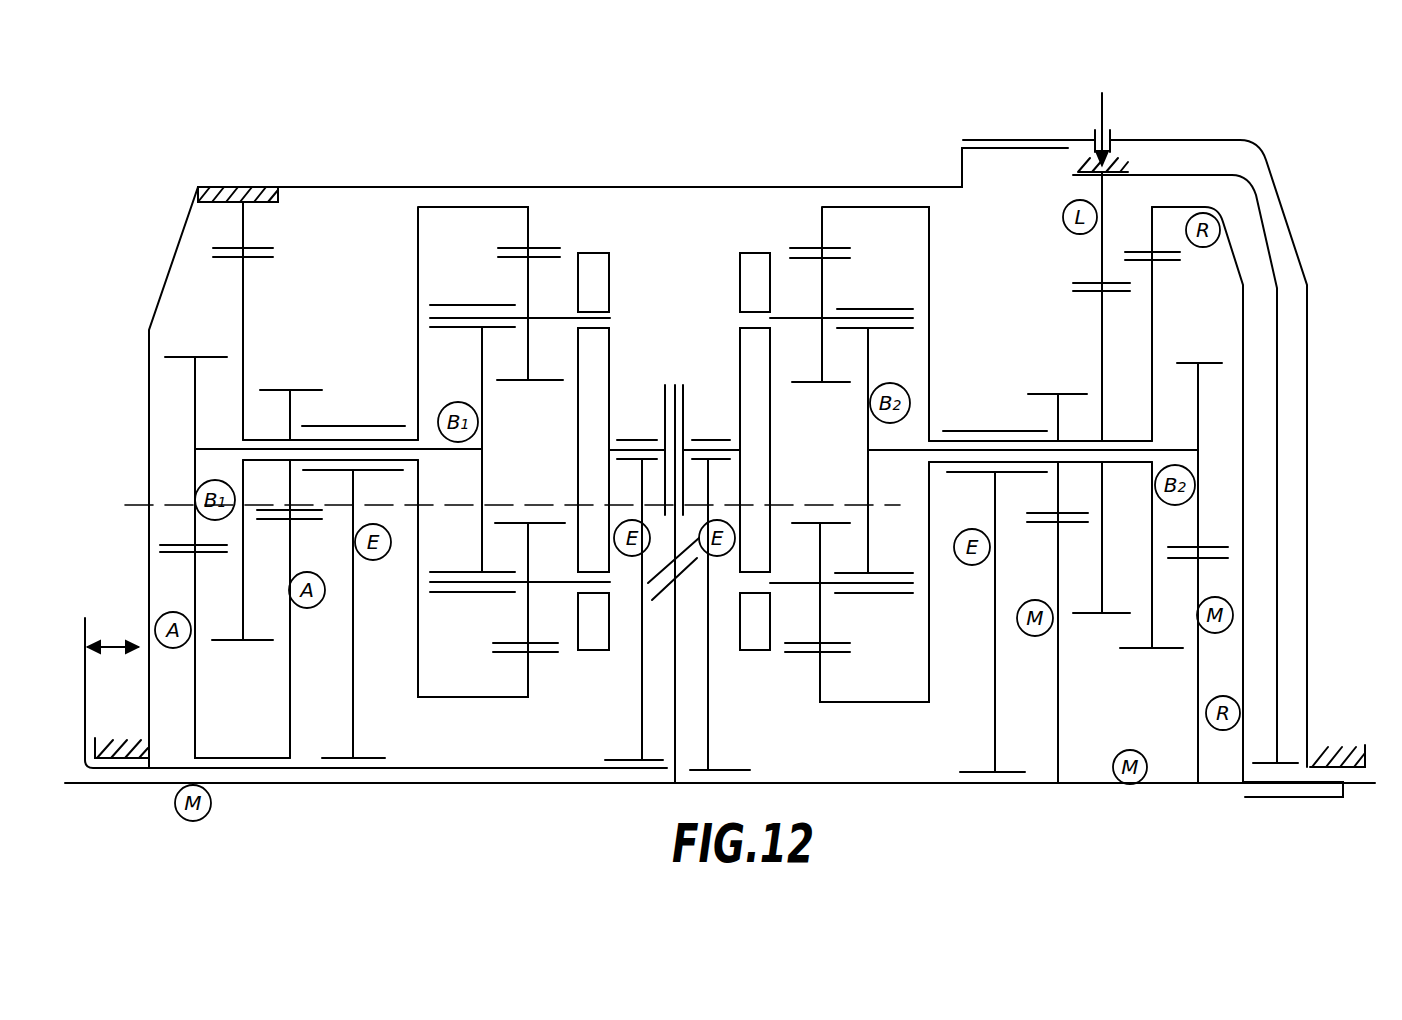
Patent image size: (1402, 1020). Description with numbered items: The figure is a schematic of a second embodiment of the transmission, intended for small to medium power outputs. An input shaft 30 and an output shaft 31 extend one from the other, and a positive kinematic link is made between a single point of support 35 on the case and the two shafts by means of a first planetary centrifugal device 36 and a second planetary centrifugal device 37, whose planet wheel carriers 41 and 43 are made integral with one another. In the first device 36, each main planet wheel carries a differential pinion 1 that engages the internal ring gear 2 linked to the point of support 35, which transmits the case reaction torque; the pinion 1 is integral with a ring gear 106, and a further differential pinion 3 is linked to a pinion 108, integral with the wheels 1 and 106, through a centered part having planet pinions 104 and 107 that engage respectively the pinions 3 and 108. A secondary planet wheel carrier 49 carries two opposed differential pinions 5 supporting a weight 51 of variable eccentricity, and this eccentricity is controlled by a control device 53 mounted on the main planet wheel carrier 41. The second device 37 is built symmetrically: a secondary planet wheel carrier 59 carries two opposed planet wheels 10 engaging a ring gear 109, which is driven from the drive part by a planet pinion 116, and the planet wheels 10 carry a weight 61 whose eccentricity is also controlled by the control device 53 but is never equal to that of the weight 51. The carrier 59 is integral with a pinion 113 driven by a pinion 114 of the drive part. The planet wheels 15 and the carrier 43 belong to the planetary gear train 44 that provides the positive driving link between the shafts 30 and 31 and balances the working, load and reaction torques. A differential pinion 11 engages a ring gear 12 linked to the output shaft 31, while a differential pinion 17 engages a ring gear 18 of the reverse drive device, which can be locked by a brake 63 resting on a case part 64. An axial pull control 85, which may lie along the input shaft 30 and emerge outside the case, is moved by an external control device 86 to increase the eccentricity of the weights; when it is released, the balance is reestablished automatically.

The differential pinion 1 is at (243, 290).
The internal ring gear 2 is at (243, 227).
The differential pinion 3 is at (193, 378).
The differential pinion 5 is at (525, 272).
The planet wheel 10 is at (805, 386).
The differential pinion 11 is at (1153, 290).
The ring gear 12 is at (1152, 240).
The planet wheel 15 is at (1055, 403).
The differential pinion 17 is at (1103, 310).
The ring gear 18 is at (1097, 252).
The input shaft 30 is at (422, 784).
The output shaft 31 is at (1368, 785).
The point of support 35 is at (228, 187).
The first planetary centrifugal device 36 is at (555, 212).
The second planetary centrifugal device 37 is at (801, 212).
The planet wheel carrier 41 is at (355, 683).
The planet wheel carrier 43 is at (995, 706).
The planetary gear train 44 is at (1203, 192).
The secondary planet wheel carrier 49 is at (482, 472).
The weight 51 is at (594, 263).
The control device 53 is at (682, 360).
The secondary planet wheel carrier 59 is at (865, 484).
The weight 61 is at (757, 275).
The brake 63 is at (1087, 155).
The case part 64 is at (1278, 190).
The axial pull control 85 is at (453, 768).
The external control device 86 is at (118, 685).
The planet pinion 104 is at (195, 563).
The ring gear 106 is at (527, 228).
The planet pinion 107 is at (290, 543).
The pinion 108 is at (290, 502).
The ring gear 109 is at (827, 238).
The pinion 113 is at (1200, 405).
The pinion 114 is at (1200, 583).
The planet pinion 116 is at (1057, 538).